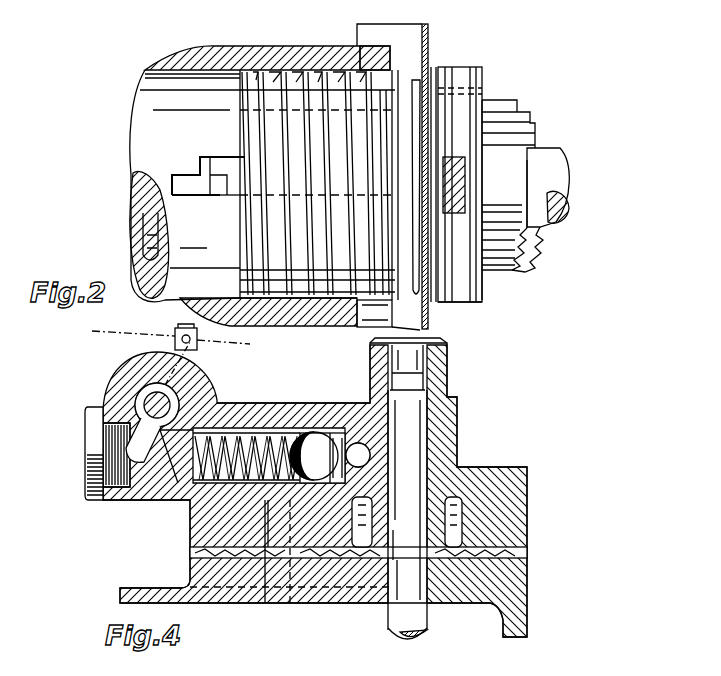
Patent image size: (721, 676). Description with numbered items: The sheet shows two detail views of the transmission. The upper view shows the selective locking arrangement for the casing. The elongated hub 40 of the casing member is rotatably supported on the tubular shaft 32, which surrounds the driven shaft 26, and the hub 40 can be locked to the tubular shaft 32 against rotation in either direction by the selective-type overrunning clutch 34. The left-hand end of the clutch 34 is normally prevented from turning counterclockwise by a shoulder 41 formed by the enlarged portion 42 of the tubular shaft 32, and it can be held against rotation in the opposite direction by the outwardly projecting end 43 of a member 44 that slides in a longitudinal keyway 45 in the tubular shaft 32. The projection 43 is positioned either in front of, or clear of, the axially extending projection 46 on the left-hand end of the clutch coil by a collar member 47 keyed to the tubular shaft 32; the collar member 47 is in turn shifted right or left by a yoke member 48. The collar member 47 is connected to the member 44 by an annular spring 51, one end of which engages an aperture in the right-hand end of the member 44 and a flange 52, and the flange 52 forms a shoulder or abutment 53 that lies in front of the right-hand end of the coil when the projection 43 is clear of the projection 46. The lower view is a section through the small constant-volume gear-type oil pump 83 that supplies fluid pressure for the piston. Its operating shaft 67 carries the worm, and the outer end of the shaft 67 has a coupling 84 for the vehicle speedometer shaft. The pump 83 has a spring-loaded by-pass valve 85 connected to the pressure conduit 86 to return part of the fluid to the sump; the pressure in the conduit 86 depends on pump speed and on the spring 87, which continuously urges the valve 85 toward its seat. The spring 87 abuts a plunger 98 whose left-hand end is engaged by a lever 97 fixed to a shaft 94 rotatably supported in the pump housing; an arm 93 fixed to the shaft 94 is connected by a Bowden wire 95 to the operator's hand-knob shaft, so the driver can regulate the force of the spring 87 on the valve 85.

In FIG. 2, the driven shaft 26 is at (560, 174).
In FIG. 2, the tubular shaft 32 is at (530, 252).
In FIG. 2, the selective-type overrunning clutch 34 is at (298, 306).
In FIG. 2, the elongated hub 40 is at (278, 52).
In FIG. 2, the shoulder 41 is at (200, 156).
In FIG. 2, the enlarged portion 42 is at (133, 140).
In FIG. 2, the outwardly projecting end 43 is at (215, 197).
In FIG. 2, the slidable member 44 is at (397, 87).
In FIG. 2, the longitudinal keyway 45 is at (173, 196).
In FIG. 2, the axially extending projection 46 is at (218, 156).
In FIG. 2, the collar member 47 is at (475, 302).
In FIG. 2, the yoke member 48 is at (462, 73).
In FIG. 2, the annular spring 51 is at (440, 66).
In FIG. 2, the flange 52 is at (389, 315).
In FIG. 2, the shoulder or abutment 53 is at (400, 88).
In FIG. 4, the operating shaft 67 is at (392, 630).
In FIG. 4, the gear-type oil pump 83 is at (458, 438).
In FIG. 4, the coupling 84 is at (422, 342).
In FIG. 4, the by-pass valve 85 is at (306, 436).
In FIG. 4, the pressure conduit 86 is at (352, 445).
In FIG. 4, the spring 87 is at (250, 432).
In FIG. 4, the arm 93 is at (200, 342).
In FIG. 4, the shaft 94 is at (180, 398).
In FIG. 4, the Bowden wire 95 is at (100, 336).
In FIG. 4, the lever 97 is at (101, 412).
In FIG. 4, the plunger 98 is at (165, 500).